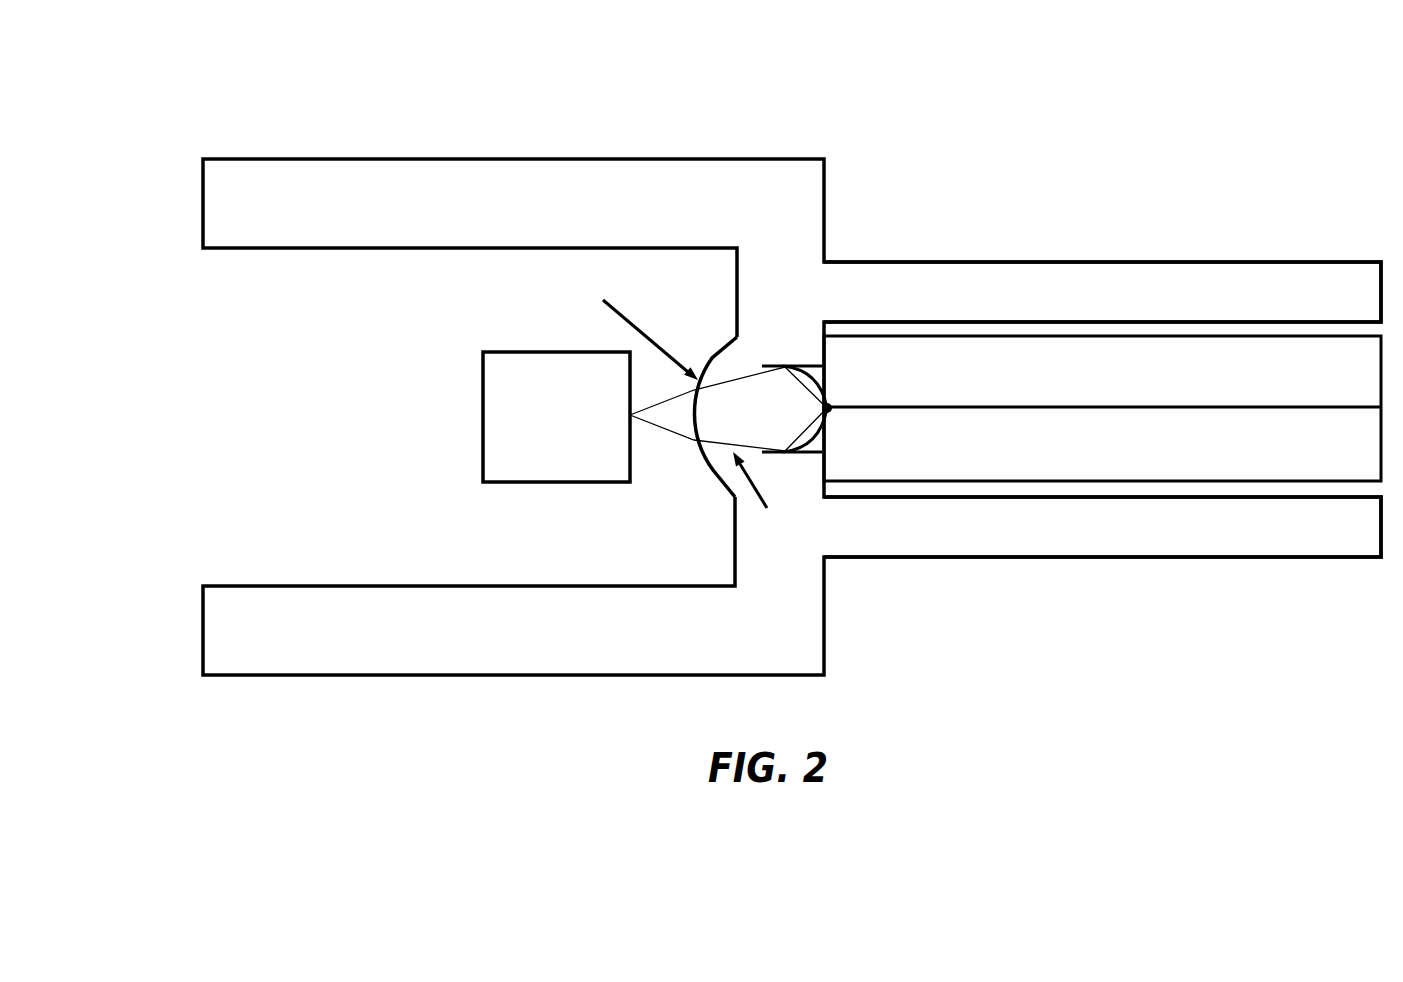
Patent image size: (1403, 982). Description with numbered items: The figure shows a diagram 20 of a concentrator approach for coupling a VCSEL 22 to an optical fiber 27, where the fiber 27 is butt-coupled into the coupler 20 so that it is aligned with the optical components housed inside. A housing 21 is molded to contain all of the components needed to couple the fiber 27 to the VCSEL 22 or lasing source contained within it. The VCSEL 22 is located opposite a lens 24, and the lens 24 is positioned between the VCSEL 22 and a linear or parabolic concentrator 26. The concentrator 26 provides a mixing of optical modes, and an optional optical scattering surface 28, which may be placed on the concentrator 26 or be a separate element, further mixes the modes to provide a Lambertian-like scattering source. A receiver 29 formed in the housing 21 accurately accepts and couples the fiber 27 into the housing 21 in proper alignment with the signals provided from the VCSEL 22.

The coupler 20 is at (160, 110).
The housing 21 is at (551, 185).
The VCSEL 22 is at (482, 385).
The lens 24 is at (713, 470).
The linear or parabolic concentrator 26 is at (802, 349).
The optical fiber 27 is at (883, 383).
The optical scattering surface 28 is at (819, 452).
The receiver 29 is at (1088, 311).